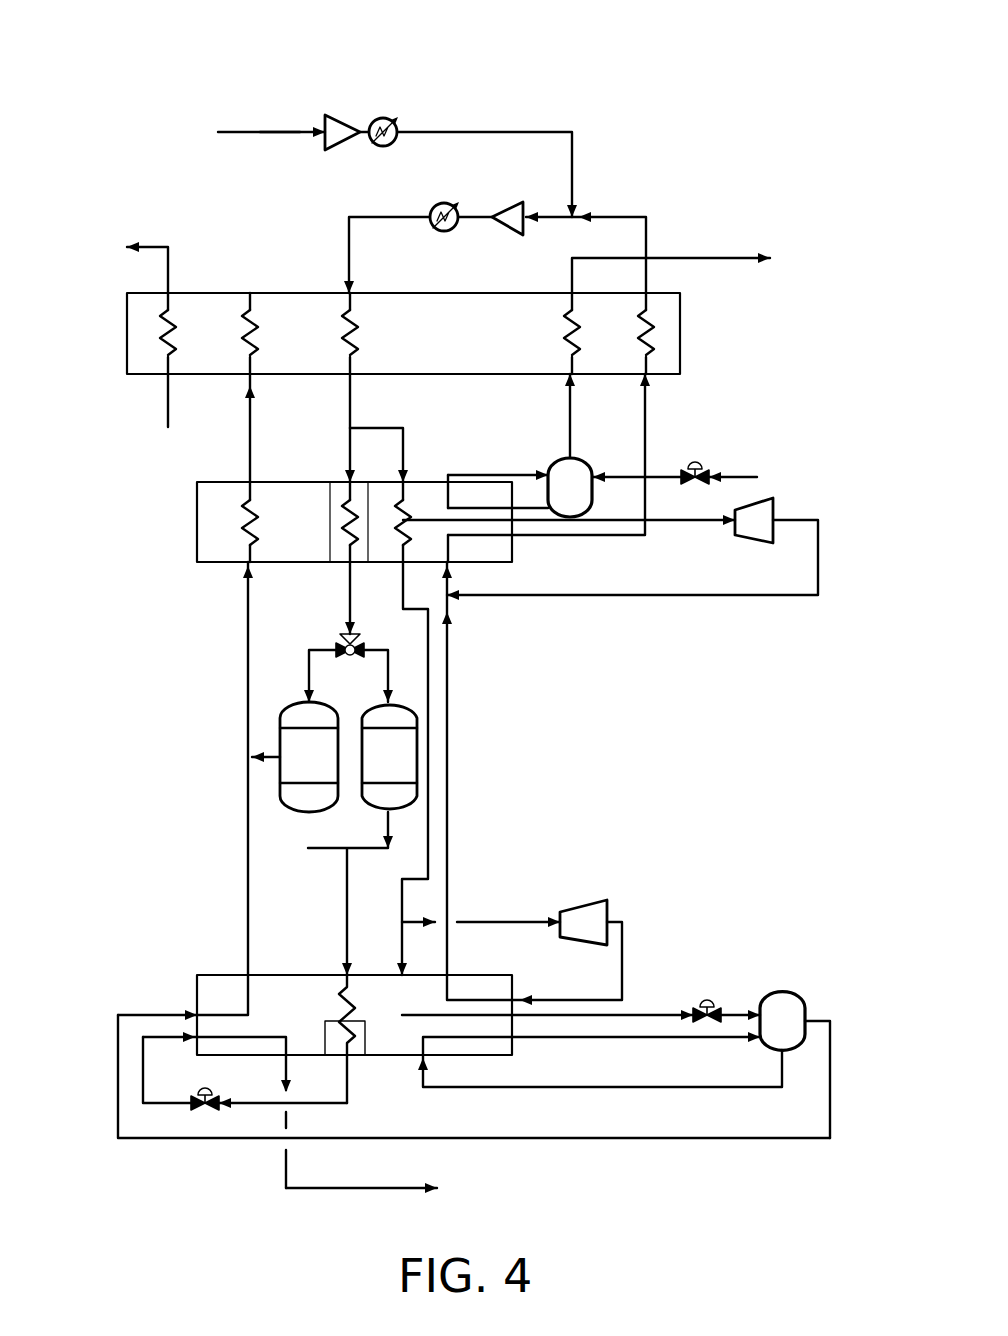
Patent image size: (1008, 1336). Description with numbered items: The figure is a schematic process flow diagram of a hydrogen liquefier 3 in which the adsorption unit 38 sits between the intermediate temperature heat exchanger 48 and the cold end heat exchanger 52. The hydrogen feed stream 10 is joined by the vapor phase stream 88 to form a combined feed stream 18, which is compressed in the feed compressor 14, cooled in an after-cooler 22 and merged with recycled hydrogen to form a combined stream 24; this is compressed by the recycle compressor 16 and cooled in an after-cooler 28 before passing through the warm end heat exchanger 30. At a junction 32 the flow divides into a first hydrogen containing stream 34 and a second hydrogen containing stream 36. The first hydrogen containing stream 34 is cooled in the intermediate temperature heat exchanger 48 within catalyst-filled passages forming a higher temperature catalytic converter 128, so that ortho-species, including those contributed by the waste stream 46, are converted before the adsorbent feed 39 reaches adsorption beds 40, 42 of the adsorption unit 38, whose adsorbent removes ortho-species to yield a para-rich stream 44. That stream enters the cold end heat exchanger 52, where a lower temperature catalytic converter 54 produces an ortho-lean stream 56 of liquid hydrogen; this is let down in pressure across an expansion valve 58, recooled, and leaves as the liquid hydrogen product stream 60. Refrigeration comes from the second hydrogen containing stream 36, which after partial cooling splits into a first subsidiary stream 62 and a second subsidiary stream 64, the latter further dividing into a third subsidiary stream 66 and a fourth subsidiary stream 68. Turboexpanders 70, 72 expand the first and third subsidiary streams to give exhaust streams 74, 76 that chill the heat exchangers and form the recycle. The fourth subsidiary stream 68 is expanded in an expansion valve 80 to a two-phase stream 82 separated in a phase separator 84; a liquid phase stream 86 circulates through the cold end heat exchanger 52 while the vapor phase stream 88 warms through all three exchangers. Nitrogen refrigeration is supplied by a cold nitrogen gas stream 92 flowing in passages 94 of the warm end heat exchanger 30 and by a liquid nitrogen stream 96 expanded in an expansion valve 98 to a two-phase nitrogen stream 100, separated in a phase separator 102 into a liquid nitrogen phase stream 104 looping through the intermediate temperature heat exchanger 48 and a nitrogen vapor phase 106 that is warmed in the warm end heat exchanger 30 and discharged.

The liquefier 3 is at (776, 104).
The hydrogen feed stream 10 is at (230, 130).
The feed compressor 14 is at (332, 165).
The recycle compressor 16 is at (502, 236).
The combined feed stream 18 is at (284, 131).
The after-cooler 22 is at (395, 118).
The combined stream 24 is at (555, 218).
The after-cooler 28 is at (445, 204).
The warm end heat exchanger 30 is at (680, 342).
The junction 32 is at (354, 427).
The first hydrogen containing stream 34 is at (353, 452).
The second hydrogen containing stream 36 is at (408, 449).
The adsorption unit 38 is at (372, 636).
The stream 39 is at (303, 622).
The adsorption bed 40 is at (296, 797).
The adsorption bed 42 is at (378, 768).
The para-rich stream 44 is at (344, 905).
The waste stream 46 is at (272, 750).
The intermediate temperature heat exchanger 48 is at (196, 528).
The cold end heat exchanger 52 is at (210, 990).
The lower temperature catalytic converter 54 is at (356, 1046).
The ortho-lean stream 56 is at (315, 1102).
The expansion valve 58 is at (210, 1086).
The liquid hydrogen product stream 60 is at (328, 1193).
The first subsidiary stream 62 is at (680, 524).
The second subsidiary stream 64 is at (425, 863).
The third subsidiary stream 66 is at (498, 920).
The fourth subsidiary stream 68 is at (400, 948).
The turboexpander 70 is at (778, 496).
The turboexpander 72 is at (598, 920).
The exhaust stream 74 is at (612, 596).
The exhaust stream 76 is at (626, 966).
The expansion valve 80 is at (709, 990).
The two-phase stream 82 is at (738, 1000).
The phase separator 84 is at (786, 998).
The liquid phase stream 86 is at (702, 1090).
The vapor phase stream 88 is at (662, 1142).
The cold nitrogen gas stream 92 is at (163, 413).
The passages 94 is at (165, 342).
The liquid nitrogen stream 96 is at (743, 468).
The expansion valve 98 is at (697, 462).
The two-phase nitrogen stream 100 is at (622, 470).
The phase separator 102 is at (568, 470).
The liquid nitrogen phase stream 104 is at (512, 470).
The nitrogen vapor phase 106 is at (575, 426).
The higher temperature catalytic converter 128 is at (336, 500).